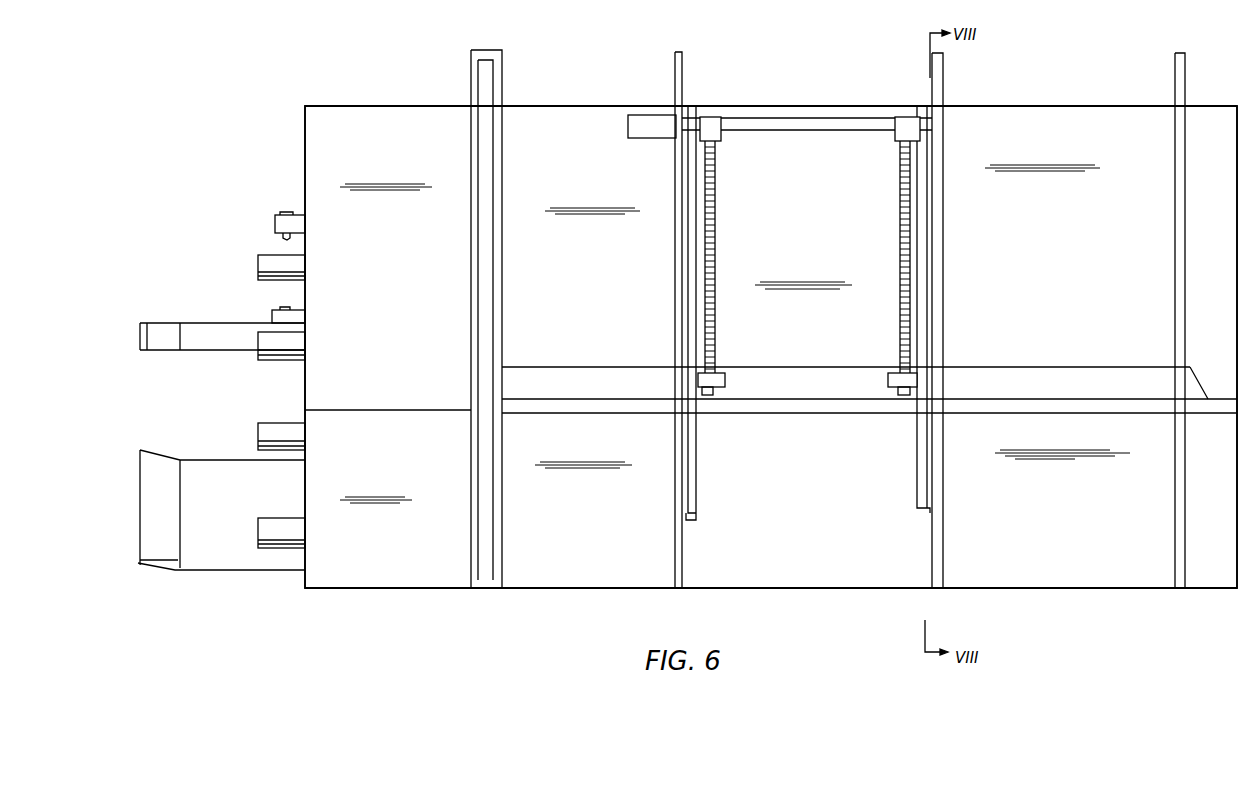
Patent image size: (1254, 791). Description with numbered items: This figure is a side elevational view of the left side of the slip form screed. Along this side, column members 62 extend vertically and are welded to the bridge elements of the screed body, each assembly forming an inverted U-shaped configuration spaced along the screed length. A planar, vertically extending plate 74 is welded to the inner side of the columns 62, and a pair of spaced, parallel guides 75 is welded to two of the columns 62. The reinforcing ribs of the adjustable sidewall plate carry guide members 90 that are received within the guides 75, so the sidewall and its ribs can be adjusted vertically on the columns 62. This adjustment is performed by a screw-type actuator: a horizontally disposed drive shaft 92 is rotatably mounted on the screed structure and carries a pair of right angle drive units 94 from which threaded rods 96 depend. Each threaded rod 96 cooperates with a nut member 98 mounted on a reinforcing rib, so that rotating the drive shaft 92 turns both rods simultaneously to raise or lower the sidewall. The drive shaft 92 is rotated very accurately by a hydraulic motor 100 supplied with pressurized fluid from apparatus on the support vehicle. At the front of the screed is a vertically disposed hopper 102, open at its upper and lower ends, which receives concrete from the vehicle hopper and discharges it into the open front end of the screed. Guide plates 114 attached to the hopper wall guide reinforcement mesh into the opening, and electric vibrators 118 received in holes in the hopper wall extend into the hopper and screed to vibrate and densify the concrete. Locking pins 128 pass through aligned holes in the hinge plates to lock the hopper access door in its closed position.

The column members 62 is at (675, 63).
The vertically extending plate 74 is at (1072, 517).
The guides 75 is at (675, 273).
The guide members 90 is at (697, 493).
The drive shaft 92 is at (818, 130).
The right angle drive units 94 is at (710, 118).
The threaded rods 96 is at (900, 243).
The nut member 98 is at (888, 380).
The hydraulic motor 100 is at (655, 138).
The hopper 102 is at (396, 297).
The guide plates 114 is at (160, 400).
The electric vibrators 118 is at (277, 348).
The locking pins 128 is at (287, 212).